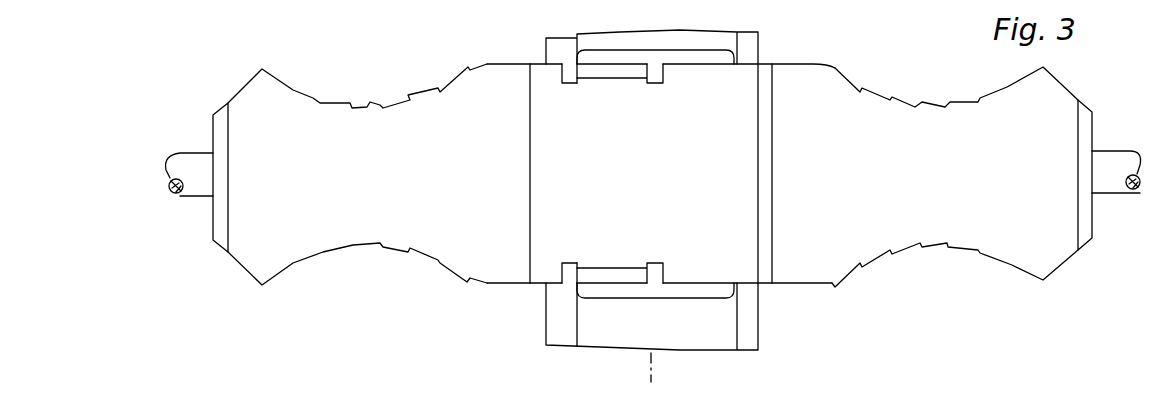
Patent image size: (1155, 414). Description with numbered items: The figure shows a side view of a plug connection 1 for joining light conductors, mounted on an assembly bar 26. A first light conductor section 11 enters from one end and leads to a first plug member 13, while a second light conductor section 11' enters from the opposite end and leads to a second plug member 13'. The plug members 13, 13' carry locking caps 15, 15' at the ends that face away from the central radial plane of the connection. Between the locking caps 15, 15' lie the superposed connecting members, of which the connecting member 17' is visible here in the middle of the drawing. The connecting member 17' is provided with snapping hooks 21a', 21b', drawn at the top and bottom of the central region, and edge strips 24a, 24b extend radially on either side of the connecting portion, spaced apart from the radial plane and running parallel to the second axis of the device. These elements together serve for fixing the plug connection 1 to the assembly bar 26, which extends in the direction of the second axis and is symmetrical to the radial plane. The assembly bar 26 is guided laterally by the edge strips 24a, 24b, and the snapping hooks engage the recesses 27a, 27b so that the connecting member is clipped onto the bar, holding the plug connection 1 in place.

The plug connection 1 is at (457, 71).
The first light conductor section 11 is at (1116, 153).
The second light conductor section 11' is at (189, 154).
The first plug member 13 is at (962, 155).
The second plug member 13' is at (350, 154).
The locking cap 15 is at (951, 65).
The locking cap 15' is at (357, 65).
The connecting member 17' is at (676, 178).
The snapping hook 21a' is at (597, 45).
The snapping hook 21b' is at (574, 302).
The edge strip 24a is at (539, 173).
The edge strip 24b is at (767, 173).
The assembly bar 26 is at (724, 338).
The recess 27a is at (632, 52).
The recess 27b is at (682, 290).